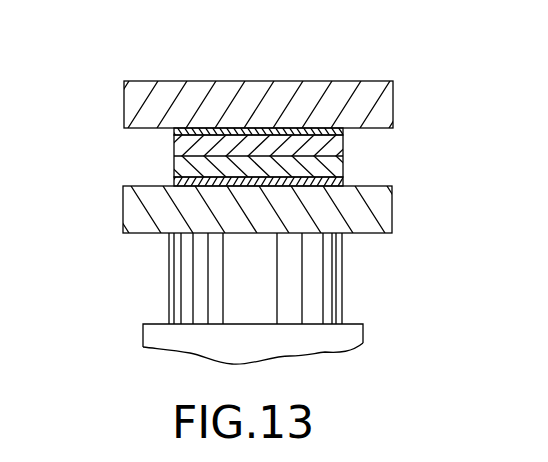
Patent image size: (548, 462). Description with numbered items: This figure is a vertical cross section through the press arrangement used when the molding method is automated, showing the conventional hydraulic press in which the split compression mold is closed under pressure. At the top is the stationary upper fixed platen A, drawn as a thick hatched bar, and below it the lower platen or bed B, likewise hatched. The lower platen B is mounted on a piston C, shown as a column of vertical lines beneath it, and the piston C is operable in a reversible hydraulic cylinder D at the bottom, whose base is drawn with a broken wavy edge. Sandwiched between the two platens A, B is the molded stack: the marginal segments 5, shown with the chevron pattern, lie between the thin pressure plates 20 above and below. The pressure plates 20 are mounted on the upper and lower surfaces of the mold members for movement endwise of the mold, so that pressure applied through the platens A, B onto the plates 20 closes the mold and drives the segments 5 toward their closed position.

The pressure plate 20 is at (300, 82).
The marginal segment 5 is at (182, 160).
The upper platen A is at (393, 114).
The lower platen B is at (392, 218).
The piston C is at (342, 280).
The hydraulic cylinder D is at (360, 332).